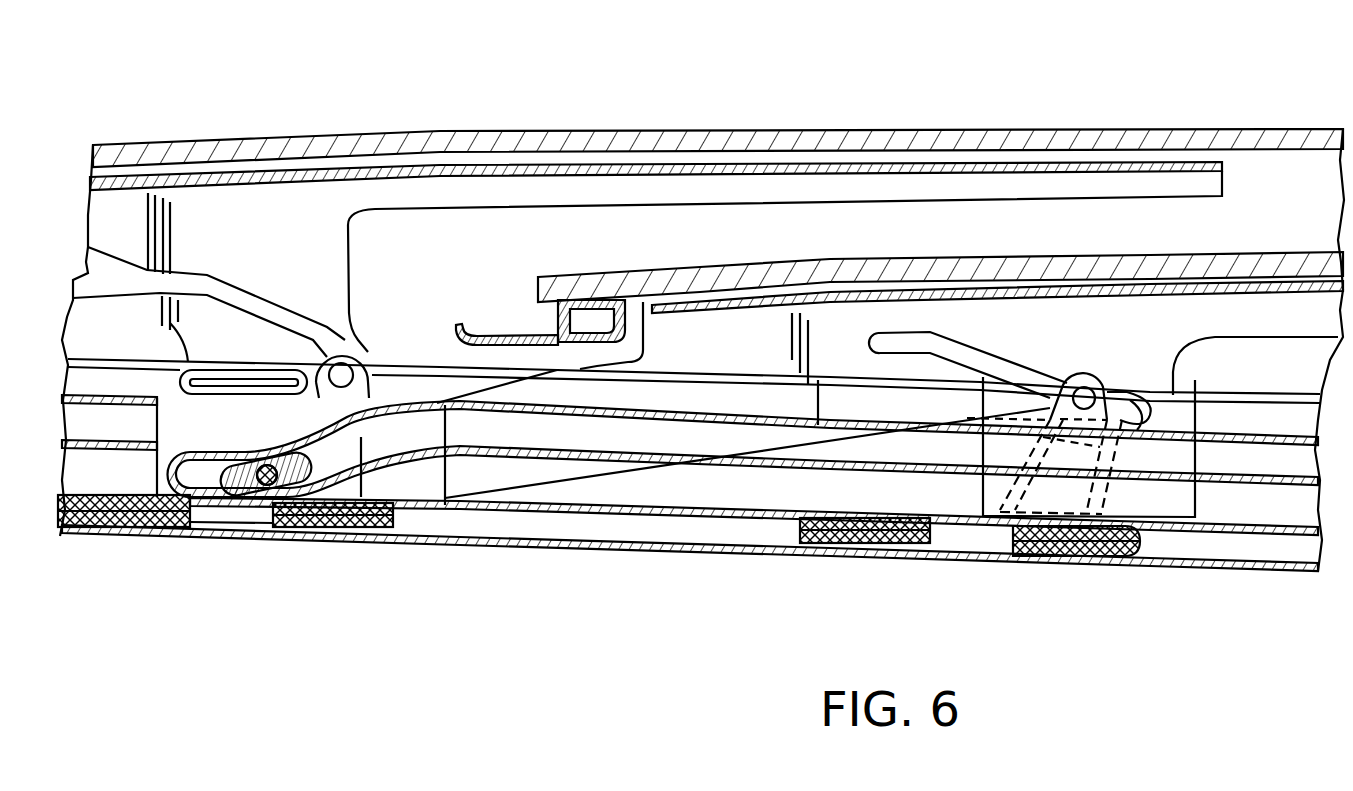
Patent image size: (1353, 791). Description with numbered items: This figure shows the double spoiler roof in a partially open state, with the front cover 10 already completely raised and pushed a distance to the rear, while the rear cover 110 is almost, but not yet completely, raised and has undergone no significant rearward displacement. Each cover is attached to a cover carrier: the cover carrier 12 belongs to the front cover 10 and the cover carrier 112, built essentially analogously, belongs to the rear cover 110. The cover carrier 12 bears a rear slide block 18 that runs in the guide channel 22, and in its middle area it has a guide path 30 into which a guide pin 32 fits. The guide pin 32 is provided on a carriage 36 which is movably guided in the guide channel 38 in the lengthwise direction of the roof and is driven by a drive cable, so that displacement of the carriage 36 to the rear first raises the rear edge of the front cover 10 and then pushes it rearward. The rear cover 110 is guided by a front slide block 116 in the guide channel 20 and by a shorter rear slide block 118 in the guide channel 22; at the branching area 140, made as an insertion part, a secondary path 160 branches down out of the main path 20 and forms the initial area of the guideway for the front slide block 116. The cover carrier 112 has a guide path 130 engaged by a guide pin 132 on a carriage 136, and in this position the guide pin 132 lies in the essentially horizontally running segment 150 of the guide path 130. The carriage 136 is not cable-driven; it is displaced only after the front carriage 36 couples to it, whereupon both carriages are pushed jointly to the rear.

The front cover 10 is at (388, 148).
The cover carrier 12 is at (283, 245).
The rear slide block 18 is at (215, 397).
The guide channel 20 is at (123, 427).
The guide channel 22 is at (673, 395).
The guide path 30 is at (205, 285).
The guide pin 32 is at (370, 340).
The carriage 36 is at (335, 505).
The guide channel 38 is at (745, 530).
The rear cover 110 is at (815, 265).
The cover carrier 112 is at (710, 337).
The front slide block 116 is at (237, 490).
The rear slide block 118 is at (1052, 565).
The guide path 130 is at (963, 350).
The guide pin 132 is at (1097, 372).
The carriage 136 is at (1105, 562).
The branching area 140 is at (405, 478).
The horizontally running segment 150 is at (1125, 362).
The secondary path 160 is at (375, 512).